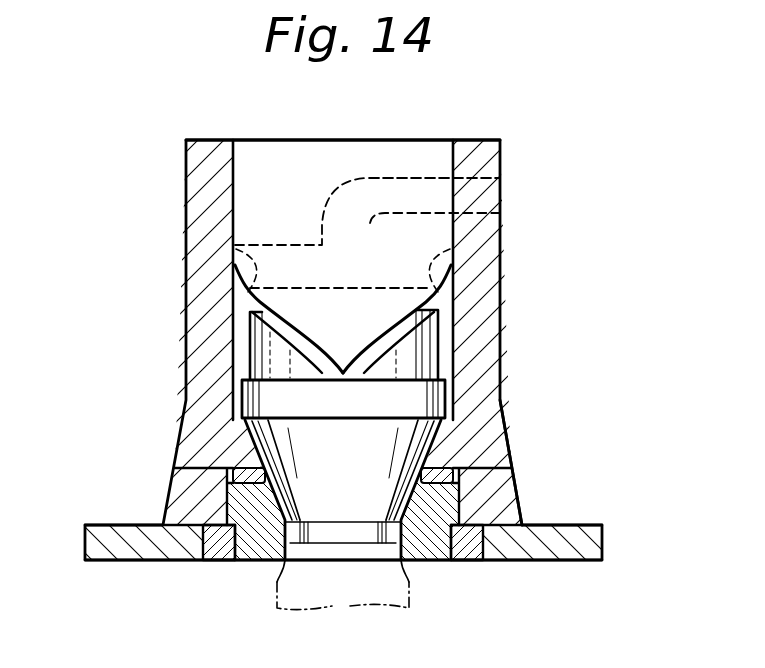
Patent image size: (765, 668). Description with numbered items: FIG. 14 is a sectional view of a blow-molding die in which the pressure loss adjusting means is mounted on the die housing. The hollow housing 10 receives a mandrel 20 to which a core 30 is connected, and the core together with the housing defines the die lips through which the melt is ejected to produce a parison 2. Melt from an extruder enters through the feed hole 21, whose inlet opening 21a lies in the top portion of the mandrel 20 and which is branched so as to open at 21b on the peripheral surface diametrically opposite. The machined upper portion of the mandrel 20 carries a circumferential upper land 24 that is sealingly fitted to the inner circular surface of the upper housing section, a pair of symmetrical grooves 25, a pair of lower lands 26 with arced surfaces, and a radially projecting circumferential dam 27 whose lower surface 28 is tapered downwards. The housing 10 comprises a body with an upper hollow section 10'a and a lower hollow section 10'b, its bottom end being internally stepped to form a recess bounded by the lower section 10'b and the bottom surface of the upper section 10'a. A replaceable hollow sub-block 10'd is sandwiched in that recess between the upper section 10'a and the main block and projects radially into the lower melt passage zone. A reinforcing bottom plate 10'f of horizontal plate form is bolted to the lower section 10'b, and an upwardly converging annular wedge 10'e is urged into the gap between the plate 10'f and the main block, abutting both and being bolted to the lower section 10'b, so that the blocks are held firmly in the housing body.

The parison 2 is at (410, 583).
The housing 10 is at (343, 326).
The upper hollow section 10'a is at (543, 411).
The lower hollow section 10'b is at (525, 496).
The replaceable hollow sub-block 10'd is at (281, 472).
The upwardly converging annular wedge 10'e is at (343, 570).
The reinforcing bottom plate 10'f is at (343, 569).
The mandrel 20 is at (453, 120).
The feed hole 21 is at (338, 253).
The inlet opening 21a is at (497, 197).
The branched opening 21b is at (505, 232).
The circumferential upper land 24 is at (352, 322).
The grooves 25 is at (250, 300).
The lower lands 26 is at (265, 357).
The circumferential dam 27 is at (355, 412).
The lower surface 28 is at (357, 465).
The core 30 is at (338, 563).